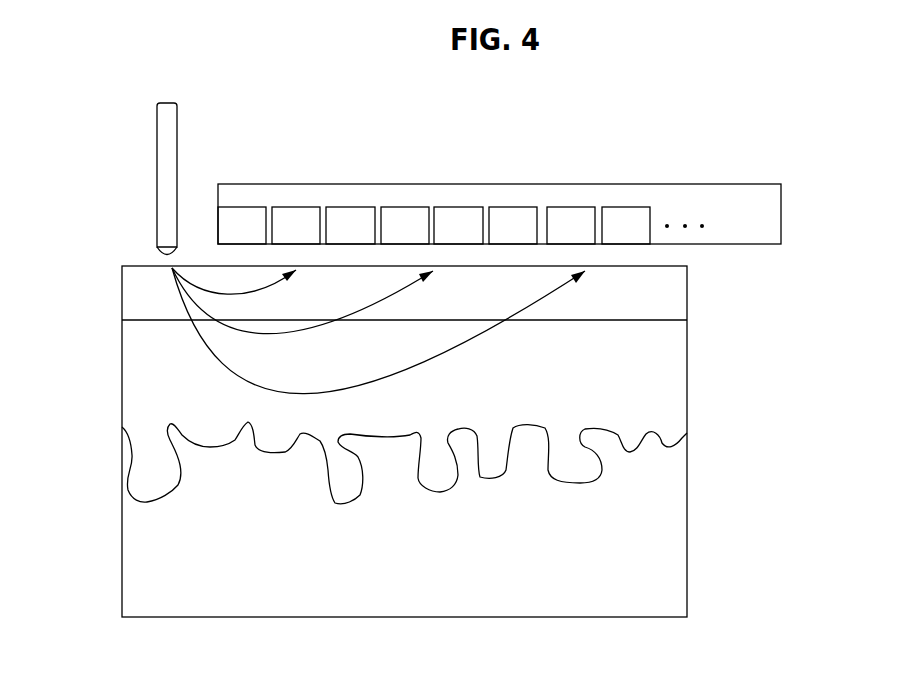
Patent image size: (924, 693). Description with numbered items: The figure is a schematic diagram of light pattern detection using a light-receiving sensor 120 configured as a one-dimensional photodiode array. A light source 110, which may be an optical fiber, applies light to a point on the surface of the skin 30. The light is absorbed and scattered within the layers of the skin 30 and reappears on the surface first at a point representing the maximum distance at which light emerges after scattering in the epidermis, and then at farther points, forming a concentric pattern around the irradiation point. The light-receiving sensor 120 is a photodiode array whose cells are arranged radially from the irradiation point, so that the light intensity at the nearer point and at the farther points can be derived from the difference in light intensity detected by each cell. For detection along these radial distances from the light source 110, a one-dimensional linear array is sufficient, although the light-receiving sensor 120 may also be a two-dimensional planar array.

The light source 110 is at (156, 176).
The light-receiving sensor 120 is at (781, 212).
The skin 30 is at (687, 372).